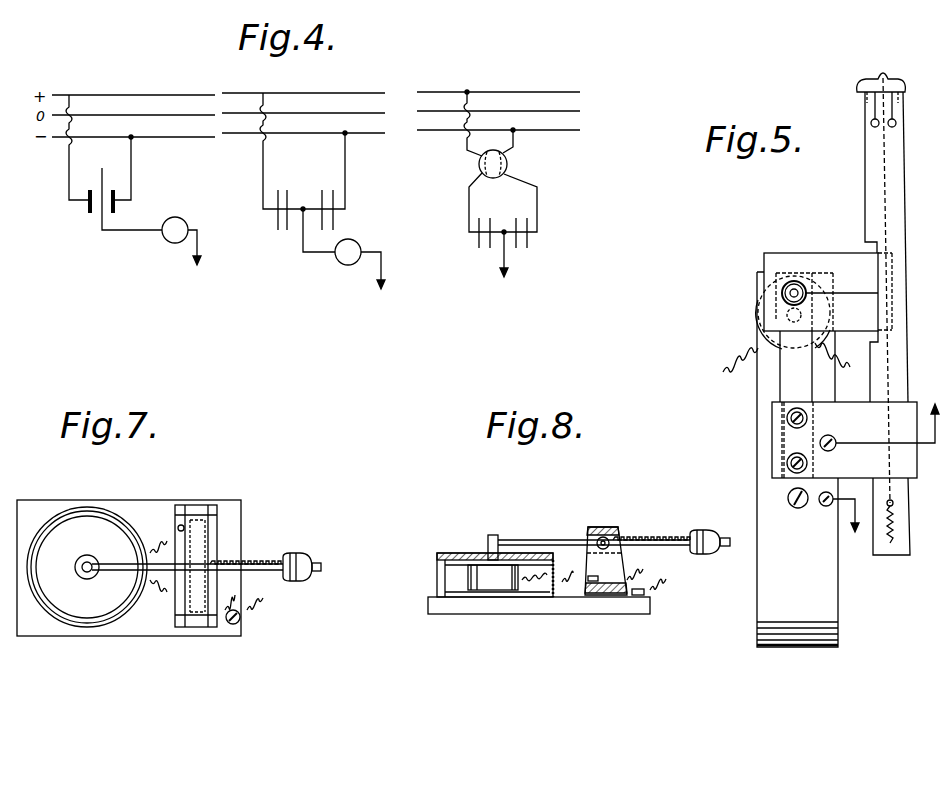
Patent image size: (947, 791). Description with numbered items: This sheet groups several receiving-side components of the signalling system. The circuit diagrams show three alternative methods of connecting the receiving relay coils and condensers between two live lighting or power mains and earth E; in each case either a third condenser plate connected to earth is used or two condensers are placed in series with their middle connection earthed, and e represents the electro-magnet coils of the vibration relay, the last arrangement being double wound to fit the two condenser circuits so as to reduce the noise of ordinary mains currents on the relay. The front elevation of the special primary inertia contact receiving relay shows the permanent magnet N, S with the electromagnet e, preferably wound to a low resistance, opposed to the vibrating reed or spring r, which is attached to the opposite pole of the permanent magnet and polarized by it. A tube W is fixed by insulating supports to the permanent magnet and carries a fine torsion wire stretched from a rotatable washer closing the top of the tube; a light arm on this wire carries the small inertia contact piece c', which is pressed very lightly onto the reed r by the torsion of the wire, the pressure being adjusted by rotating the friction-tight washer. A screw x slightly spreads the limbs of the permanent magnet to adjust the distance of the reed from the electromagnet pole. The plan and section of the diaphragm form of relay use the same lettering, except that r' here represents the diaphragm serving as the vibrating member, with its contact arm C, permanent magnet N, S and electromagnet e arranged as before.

In FIG. 4, the electromagnet coils e is at (179, 219).
In FIG. 5, the electromagnet coils e is at (763, 323).
In FIG. 8, the electromagnet coils e is at (526, 599).
In FIG. 4, the earth terminal E is at (349, 275).
In FIG. 5, the tube W is at (900, 176).
In FIG. 5, the permanent magnet pole N is at (757, 291).
In FIG. 8, the permanent magnet pole N is at (449, 598).
In FIG. 5, the inertia contact piece c' is at (800, 304).
In FIG. 5, the vibrating reed r is at (792, 423).
In FIG. 5, the permanent magnet pole S is at (763, 406).
In FIG. 8, the permanent magnet pole S is at (509, 591).
In FIG. 5, the adjusting screw x is at (788, 498).
In FIG. 7, the contact arm / shaft C is at (91, 561).
In FIG. 8, the contact arm / shaft C is at (497, 540).
In FIG. 8, the diaphragm r' is at (509, 561).